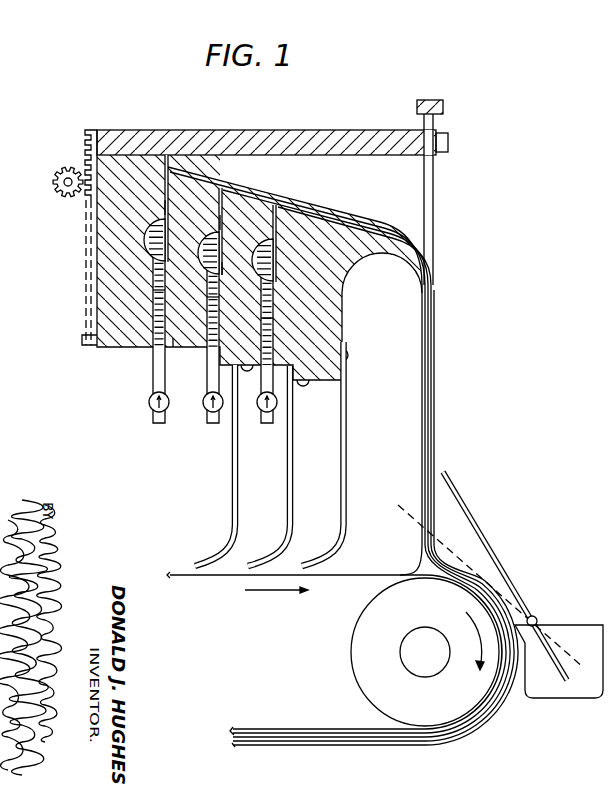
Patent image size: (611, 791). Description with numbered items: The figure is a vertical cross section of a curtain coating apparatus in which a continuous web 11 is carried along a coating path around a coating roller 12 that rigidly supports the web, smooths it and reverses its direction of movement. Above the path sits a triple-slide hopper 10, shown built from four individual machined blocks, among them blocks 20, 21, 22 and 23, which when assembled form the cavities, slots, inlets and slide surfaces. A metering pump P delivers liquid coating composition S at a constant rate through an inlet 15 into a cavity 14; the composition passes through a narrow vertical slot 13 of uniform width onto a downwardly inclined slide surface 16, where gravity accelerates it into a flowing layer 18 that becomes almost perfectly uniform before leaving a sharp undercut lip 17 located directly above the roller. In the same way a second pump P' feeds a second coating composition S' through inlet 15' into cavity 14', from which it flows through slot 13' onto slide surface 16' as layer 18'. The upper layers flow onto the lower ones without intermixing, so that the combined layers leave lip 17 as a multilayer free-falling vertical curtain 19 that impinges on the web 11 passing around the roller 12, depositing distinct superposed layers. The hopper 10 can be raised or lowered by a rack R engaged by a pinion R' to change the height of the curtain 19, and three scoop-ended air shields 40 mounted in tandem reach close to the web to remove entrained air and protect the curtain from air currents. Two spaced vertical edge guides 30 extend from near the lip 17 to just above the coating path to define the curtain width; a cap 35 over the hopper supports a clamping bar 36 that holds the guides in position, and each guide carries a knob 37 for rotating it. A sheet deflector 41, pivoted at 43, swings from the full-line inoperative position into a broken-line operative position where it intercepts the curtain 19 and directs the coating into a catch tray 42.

The triple-slide hopper 10 is at (77, 348).
The continuous web 11 is at (215, 578).
The coating roller 12 is at (432, 617).
The vertical slot 13 is at (374, 368).
The vertical slot 13' is at (251, 169).
The cavity 14 is at (309, 274).
The second cavity 14' is at (158, 203).
The inlet 15 is at (257, 327).
The inlet 15' is at (201, 305).
The inclined slide surface 16 is at (389, 373).
The inclined slide surface 16' is at (194, 219).
The lip 17 is at (410, 270).
The flowing layer 18 is at (354, 234).
The flowing layer 18' is at (325, 231).
The multilayer free-falling vertical curtain 19 is at (421, 422).
The hopper block 20 is at (320, 363).
The hopper block 21 is at (292, 386).
The hopper block 22 is at (173, 338).
The hopper block 23 is at (95, 350).
The vertical edge guide 30 is at (435, 228).
The cap 35 is at (348, 132).
The clamping bar 36 is at (447, 136).
The knob 37 is at (438, 103).
The air shield 40 is at (232, 505).
The sheet deflector 41 is at (467, 507).
The catch tray 42 is at (567, 633).
The pivot 43 is at (534, 618).
The metering pump P is at (283, 414).
The metering pump P' is at (198, 413).
The rack R is at (69, 161).
The pinion R' is at (56, 194).
The liquid coating composition S is at (309, 326).
The liquid coating composition S' is at (136, 315).